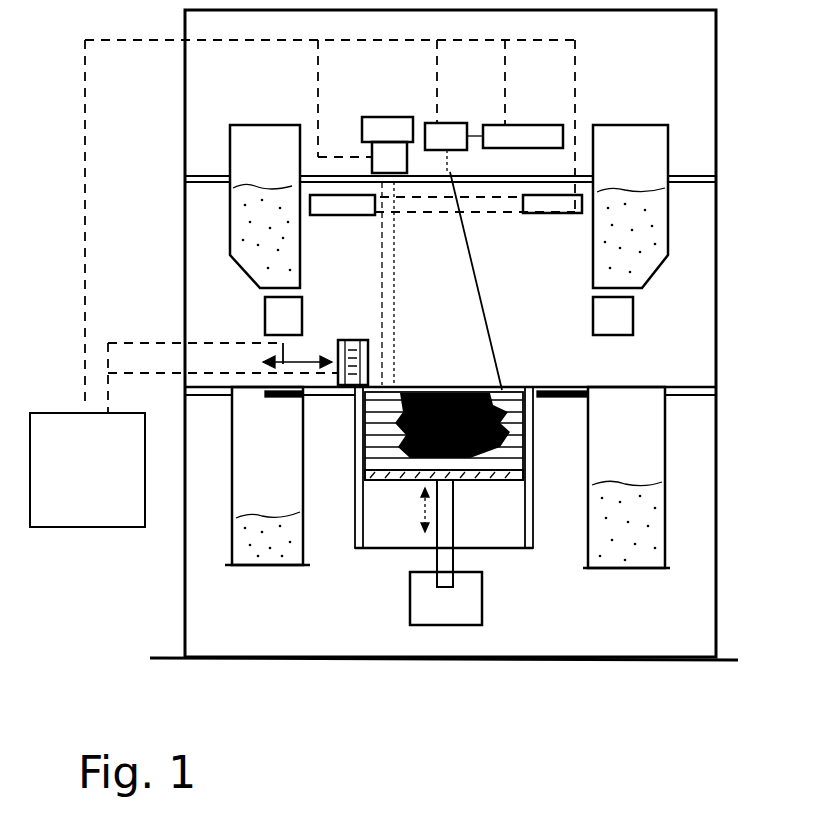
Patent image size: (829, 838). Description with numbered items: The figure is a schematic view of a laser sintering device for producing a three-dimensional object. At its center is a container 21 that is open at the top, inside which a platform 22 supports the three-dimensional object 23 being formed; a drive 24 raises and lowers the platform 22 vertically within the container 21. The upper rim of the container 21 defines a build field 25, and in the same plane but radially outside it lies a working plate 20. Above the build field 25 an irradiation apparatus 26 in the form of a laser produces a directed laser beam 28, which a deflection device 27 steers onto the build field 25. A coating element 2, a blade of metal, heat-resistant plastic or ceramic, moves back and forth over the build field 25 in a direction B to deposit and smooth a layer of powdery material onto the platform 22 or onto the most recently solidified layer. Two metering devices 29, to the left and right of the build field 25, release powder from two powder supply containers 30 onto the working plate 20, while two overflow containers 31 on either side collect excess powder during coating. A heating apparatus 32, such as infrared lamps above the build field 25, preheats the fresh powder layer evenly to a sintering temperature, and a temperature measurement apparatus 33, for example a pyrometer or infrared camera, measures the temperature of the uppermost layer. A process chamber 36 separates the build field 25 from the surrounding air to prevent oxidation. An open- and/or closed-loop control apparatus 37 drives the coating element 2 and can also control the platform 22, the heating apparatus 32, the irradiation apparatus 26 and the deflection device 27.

The coating element 2 is at (358, 335).
The working plate 20 is at (558, 387).
The container 21 is at (346, 460).
The platform 22 is at (480, 482).
The three-dimensional object 23 is at (432, 390).
The drive 24 is at (470, 600).
The build field 25 is at (548, 435).
The irradiation apparatus 26 is at (527, 133).
The deflection device 27 is at (452, 123).
The laser beam 28 is at (478, 297).
The metering device 29 is at (265, 317).
The powder supply container 30 is at (258, 150).
The overflow container 31 is at (262, 568).
The heating apparatus 32 is at (345, 215).
The temperature measurement apparatus 33 is at (397, 157).
The process chamber 36 is at (717, 285).
The open- and/or closed-loop control apparatus 37 is at (90, 505).